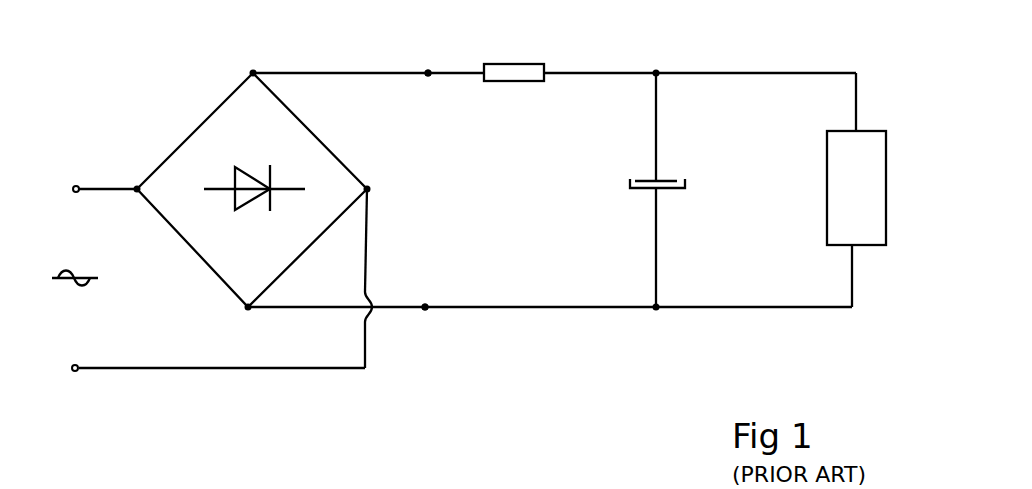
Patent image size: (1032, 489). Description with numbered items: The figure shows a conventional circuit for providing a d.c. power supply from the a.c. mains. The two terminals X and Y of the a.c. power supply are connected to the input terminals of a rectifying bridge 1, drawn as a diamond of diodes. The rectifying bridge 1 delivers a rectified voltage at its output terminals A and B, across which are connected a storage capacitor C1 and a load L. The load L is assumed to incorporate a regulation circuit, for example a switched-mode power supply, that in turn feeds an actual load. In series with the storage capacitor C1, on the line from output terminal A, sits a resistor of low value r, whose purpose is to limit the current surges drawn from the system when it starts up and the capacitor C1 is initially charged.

The rectifying bridge 1 is at (165, 126).
The resistor of low value r is at (510, 64).
The storage capacitor C1 is at (641, 190).
The load L is at (886, 177).
The output terminal A is at (427, 60).
The output terminal B is at (424, 294).
The terminal of the a.c. power supply X is at (62, 189).
The terminal of the a.c. power supply Y is at (62, 369).